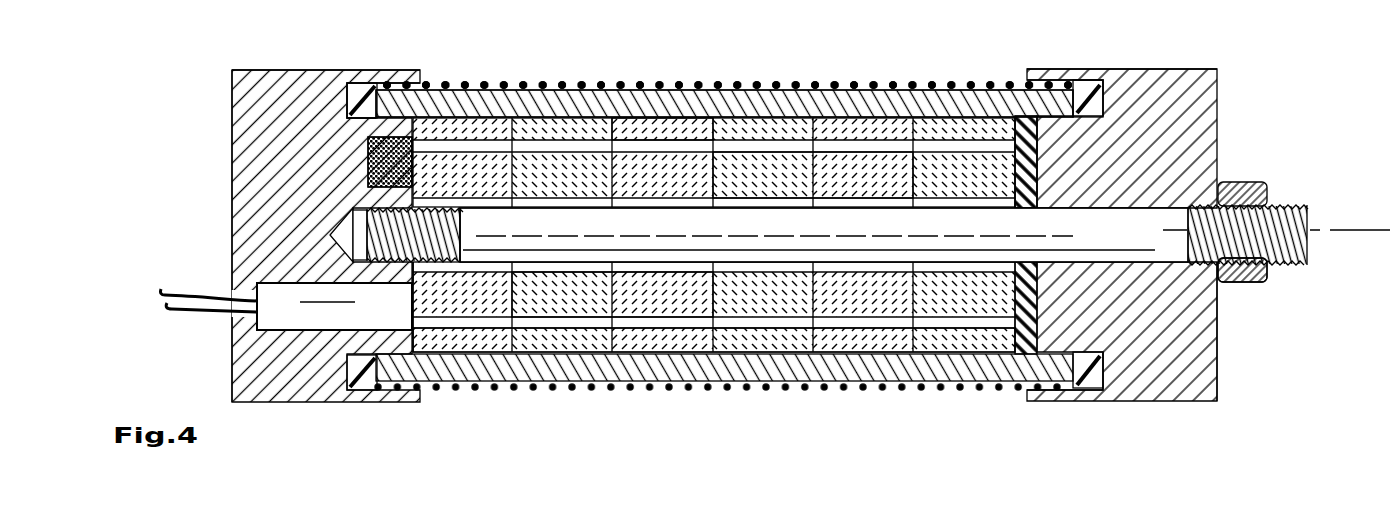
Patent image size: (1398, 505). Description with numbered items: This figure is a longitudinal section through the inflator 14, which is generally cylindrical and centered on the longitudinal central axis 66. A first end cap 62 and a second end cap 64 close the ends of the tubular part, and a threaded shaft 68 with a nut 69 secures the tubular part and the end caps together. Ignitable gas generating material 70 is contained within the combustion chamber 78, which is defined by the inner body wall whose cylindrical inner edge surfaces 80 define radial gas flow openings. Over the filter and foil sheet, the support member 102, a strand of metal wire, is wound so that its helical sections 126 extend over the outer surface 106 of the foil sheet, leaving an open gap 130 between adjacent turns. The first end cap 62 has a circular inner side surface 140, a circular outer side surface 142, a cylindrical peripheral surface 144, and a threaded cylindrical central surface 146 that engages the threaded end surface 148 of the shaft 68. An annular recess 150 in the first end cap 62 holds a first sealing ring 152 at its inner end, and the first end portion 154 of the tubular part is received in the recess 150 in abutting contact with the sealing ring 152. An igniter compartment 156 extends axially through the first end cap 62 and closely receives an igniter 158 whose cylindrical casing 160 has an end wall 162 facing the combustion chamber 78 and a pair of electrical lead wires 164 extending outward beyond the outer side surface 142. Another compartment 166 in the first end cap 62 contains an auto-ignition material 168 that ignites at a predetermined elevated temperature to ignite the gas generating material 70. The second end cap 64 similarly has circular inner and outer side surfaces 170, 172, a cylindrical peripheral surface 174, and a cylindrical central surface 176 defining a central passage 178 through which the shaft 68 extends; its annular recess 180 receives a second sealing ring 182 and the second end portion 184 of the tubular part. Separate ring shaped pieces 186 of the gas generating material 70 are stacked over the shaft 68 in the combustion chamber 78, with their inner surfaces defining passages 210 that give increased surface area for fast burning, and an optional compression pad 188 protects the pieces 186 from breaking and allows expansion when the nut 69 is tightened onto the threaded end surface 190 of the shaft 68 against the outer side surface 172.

The inflator 14 is at (766, 224).
The first end cap 62 is at (228, 80).
The second end cap 64 is at (1224, 80).
The longitudinal central axis 66 is at (1368, 228).
The threaded shaft 68 is at (1285, 201).
The nut 69 is at (1240, 182).
The ignitable gas generating material 70 is at (601, 114).
The combustion chamber 78 is at (641, 136).
The cylindrical inner edge surfaces 80 is at (590, 64).
The support member 102 is at (536, 68).
The cylindrical outer surface 106 is at (693, 85).
The helical sections 126 is at (777, 82).
The gap 130 is at (786, 78).
The inner side surface 140 is at (410, 335).
The outer side surface 142 is at (232, 358).
The cylindrical peripheral surface 144 is at (318, 70).
The cylindrical central surface 146 is at (372, 209).
The threaded end surface 148 is at (356, 208).
The annular recess 150 is at (430, 105).
The first sealing ring 152 is at (365, 105).
The first end portion 154 is at (350, 84).
The igniter compartment 156 is at (392, 305).
The igniter 158 is at (293, 334).
The cylindrical casing 160 is at (343, 303).
The end wall 162 is at (414, 285).
The electrical lead wires 164 is at (198, 300).
The compartment 166 is at (364, 142).
The auto-ignition material 168 is at (377, 170).
The inner side surface 170 is at (1018, 352).
The outer side surface 172 is at (1220, 328).
The cylindrical peripheral surface 174 is at (1197, 67).
The cylindrical central surface 176 is at (1155, 208).
The central passage 178 is at (1022, 220).
The annular recess 180 is at (1030, 103).
The second sealing ring 182 is at (1083, 93).
The second end portion 184 is at (1053, 100).
The ring shaped pieces 186 is at (833, 184).
The compression pad 188 is at (1010, 320).
The threaded end surface 190 is at (1287, 263).
The passages 210 is at (578, 320).